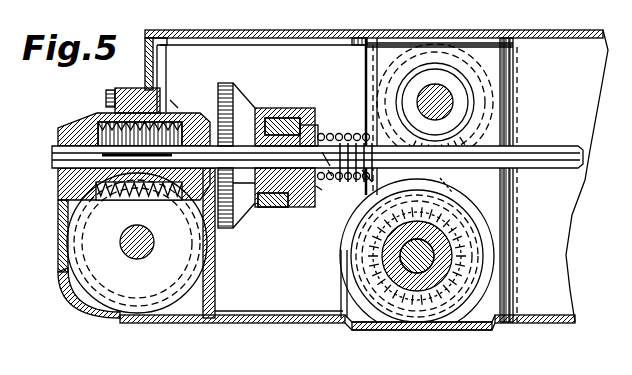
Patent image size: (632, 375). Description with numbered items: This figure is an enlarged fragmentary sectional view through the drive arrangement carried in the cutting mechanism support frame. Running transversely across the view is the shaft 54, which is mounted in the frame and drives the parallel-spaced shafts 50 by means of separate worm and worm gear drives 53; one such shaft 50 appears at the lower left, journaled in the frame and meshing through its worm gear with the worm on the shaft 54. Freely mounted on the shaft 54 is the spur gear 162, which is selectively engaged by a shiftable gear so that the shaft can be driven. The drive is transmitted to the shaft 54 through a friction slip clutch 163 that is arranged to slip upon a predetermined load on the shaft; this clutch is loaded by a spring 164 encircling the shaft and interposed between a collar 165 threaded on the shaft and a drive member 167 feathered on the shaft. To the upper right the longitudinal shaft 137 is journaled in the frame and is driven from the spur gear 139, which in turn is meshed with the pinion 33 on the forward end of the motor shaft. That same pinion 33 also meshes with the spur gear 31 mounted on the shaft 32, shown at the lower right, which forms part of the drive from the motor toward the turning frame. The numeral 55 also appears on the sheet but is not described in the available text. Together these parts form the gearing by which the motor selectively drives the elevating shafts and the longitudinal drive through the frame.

The housing 55 is at (15, 12).
The longitudinal shaft 137 is at (447, 90).
The spur gear 139 is at (483, 83).
The shaft 54 is at (536, 148).
The worm and worm gear drive 53 is at (173, 100).
The spur gear 162 is at (228, 96).
The friction slip clutch 163 is at (285, 110).
The spring 164 is at (342, 133).
The collar 165 is at (365, 178).
The drive member 167 is at (320, 186).
The shaft 50 is at (150, 246).
The pinion 33 is at (440, 217).
The spur gear 31 is at (438, 218).
The shaft 32 is at (437, 265).